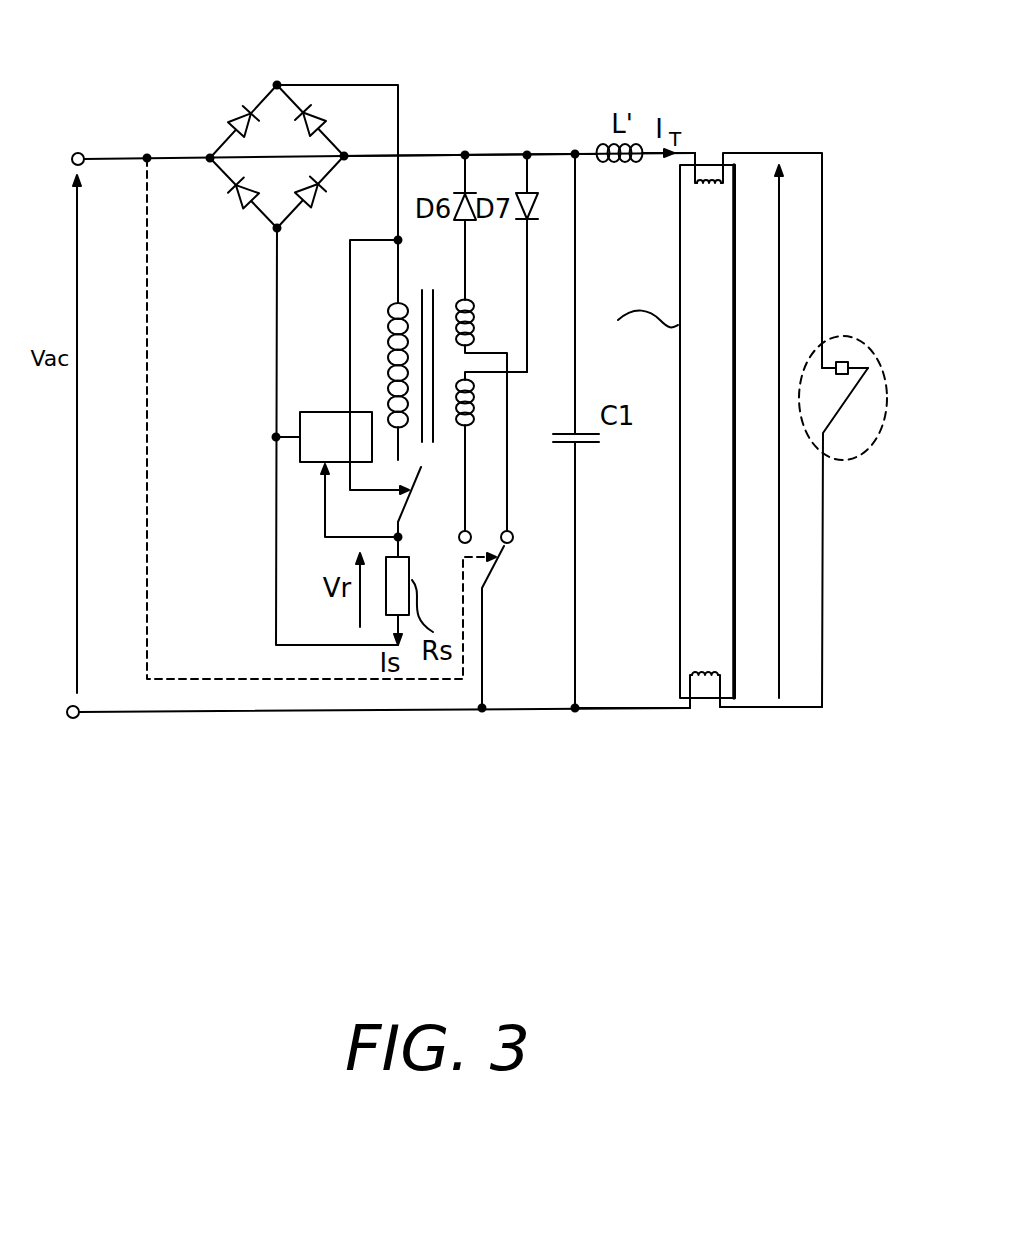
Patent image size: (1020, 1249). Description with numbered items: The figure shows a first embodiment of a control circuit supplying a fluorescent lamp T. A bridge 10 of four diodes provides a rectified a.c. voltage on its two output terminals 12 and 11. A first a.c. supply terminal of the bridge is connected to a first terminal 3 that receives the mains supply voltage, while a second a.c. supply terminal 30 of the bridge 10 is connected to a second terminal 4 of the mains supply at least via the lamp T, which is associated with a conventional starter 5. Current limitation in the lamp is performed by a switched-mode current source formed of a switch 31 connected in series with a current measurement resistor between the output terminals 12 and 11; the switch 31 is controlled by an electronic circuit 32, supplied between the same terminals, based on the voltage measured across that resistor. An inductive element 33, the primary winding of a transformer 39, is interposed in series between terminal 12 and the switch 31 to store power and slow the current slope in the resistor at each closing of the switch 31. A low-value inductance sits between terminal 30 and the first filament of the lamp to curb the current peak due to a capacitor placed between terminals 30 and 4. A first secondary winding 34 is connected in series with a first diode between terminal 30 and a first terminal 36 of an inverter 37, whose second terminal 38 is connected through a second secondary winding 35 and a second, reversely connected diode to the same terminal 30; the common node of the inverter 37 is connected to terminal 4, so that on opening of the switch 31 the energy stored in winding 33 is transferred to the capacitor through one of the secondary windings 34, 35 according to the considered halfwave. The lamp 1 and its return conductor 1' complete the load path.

The fluorescent lamp tube 1 is at (709, 393).
The lamp return conductor 1' is at (632, 748).
The first terminal 3 is at (79, 152).
The second terminal 4 is at (74, 719).
The starter 5 is at (852, 338).
The bridge 10 is at (211, 116).
The output terminal 11 is at (276, 305).
The output terminal 12 is at (330, 84).
The second a.c. supply terminal 30 is at (355, 153).
The switch 31 is at (420, 504).
The electronic circuit 32 is at (325, 410).
The inductive element 33 is at (378, 358).
The first secondary winding 34 is at (479, 308).
The second secondary winding 35 is at (491, 402).
The first terminal 36 is at (513, 536).
The inverter 37 is at (510, 579).
The second terminal 38 is at (477, 528).
The transformer 39 is at (424, 272).